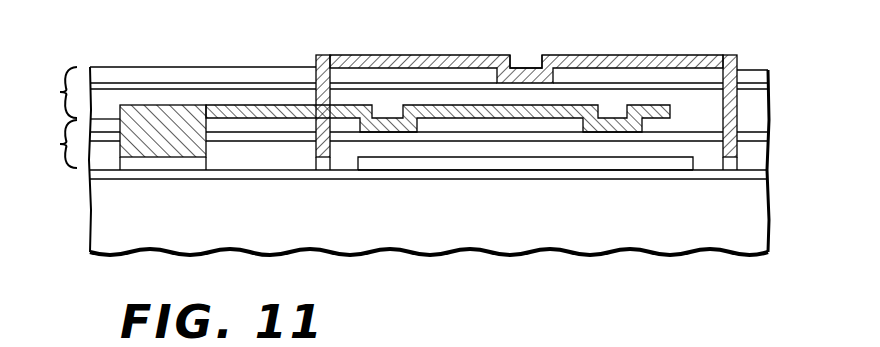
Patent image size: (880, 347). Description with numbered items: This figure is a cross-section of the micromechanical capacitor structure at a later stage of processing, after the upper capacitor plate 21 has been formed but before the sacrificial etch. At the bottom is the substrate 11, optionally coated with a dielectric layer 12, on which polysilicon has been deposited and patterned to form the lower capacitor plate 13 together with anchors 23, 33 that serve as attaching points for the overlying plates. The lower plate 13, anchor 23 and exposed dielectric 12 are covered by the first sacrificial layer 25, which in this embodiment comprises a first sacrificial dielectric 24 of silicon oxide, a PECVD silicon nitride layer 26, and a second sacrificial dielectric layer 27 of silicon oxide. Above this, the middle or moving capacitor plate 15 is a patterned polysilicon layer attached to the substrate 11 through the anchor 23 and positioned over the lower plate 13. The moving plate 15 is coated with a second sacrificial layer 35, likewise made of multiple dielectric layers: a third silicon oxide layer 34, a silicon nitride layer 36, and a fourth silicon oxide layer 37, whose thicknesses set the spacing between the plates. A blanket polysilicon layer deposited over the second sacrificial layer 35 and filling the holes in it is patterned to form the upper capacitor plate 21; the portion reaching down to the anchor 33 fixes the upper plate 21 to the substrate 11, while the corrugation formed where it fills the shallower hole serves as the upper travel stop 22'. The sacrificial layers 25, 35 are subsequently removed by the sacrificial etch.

The substrate 11 is at (253, 226).
The dielectric layer 12 is at (477, 178).
The lower capacitor plate 13 is at (597, 167).
The moving capacitor plate 15 is at (248, 104).
The upper capacitor plate 21 is at (657, 56).
The upper travel stop 22' is at (519, 40).
The anchor 23 is at (164, 165).
The first sacrificial dielectric 24 is at (768, 165).
The sacrificial layer 25 is at (74, 143).
The silicon nitride layer 26 is at (768, 139).
The second sacrificial dielectric layer 27 is at (766, 131).
The anchor 33 is at (323, 165).
The third silicon oxide layer 34 is at (768, 108).
The second sacrificial layer 35 is at (53, 92).
The silicon nitride layer 36 is at (768, 88).
The fourth silicon oxide layer 37 is at (758, 70).